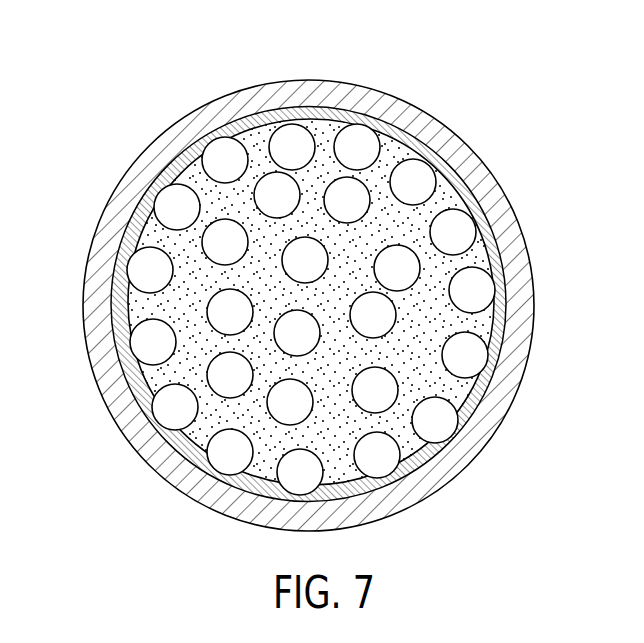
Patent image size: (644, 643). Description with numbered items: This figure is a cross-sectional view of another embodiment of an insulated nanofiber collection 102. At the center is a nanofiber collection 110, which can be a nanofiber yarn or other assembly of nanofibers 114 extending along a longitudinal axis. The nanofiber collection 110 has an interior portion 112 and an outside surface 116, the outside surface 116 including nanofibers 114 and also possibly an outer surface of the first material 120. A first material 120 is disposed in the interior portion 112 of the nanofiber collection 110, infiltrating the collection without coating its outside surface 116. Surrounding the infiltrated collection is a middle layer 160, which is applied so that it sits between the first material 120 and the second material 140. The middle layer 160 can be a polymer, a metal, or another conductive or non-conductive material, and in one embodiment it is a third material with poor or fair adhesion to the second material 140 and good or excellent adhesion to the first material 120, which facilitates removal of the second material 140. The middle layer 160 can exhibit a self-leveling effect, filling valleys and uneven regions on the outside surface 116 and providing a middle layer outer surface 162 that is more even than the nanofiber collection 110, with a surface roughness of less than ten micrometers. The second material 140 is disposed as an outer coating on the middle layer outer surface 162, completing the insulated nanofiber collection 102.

The insulated nanofiber collection 102 is at (568, 112).
The nanofiber collection 110 is at (502, 275).
The interior portion 112 is at (190, 328).
The nanofibers 114 is at (147, 265).
The outside surface 116 is at (320, 128).
The first material 120 is at (452, 390).
The second material 140 is at (513, 360).
The middle layer 160 is at (500, 305).
The middle layer outer surface 162 is at (323, 128).